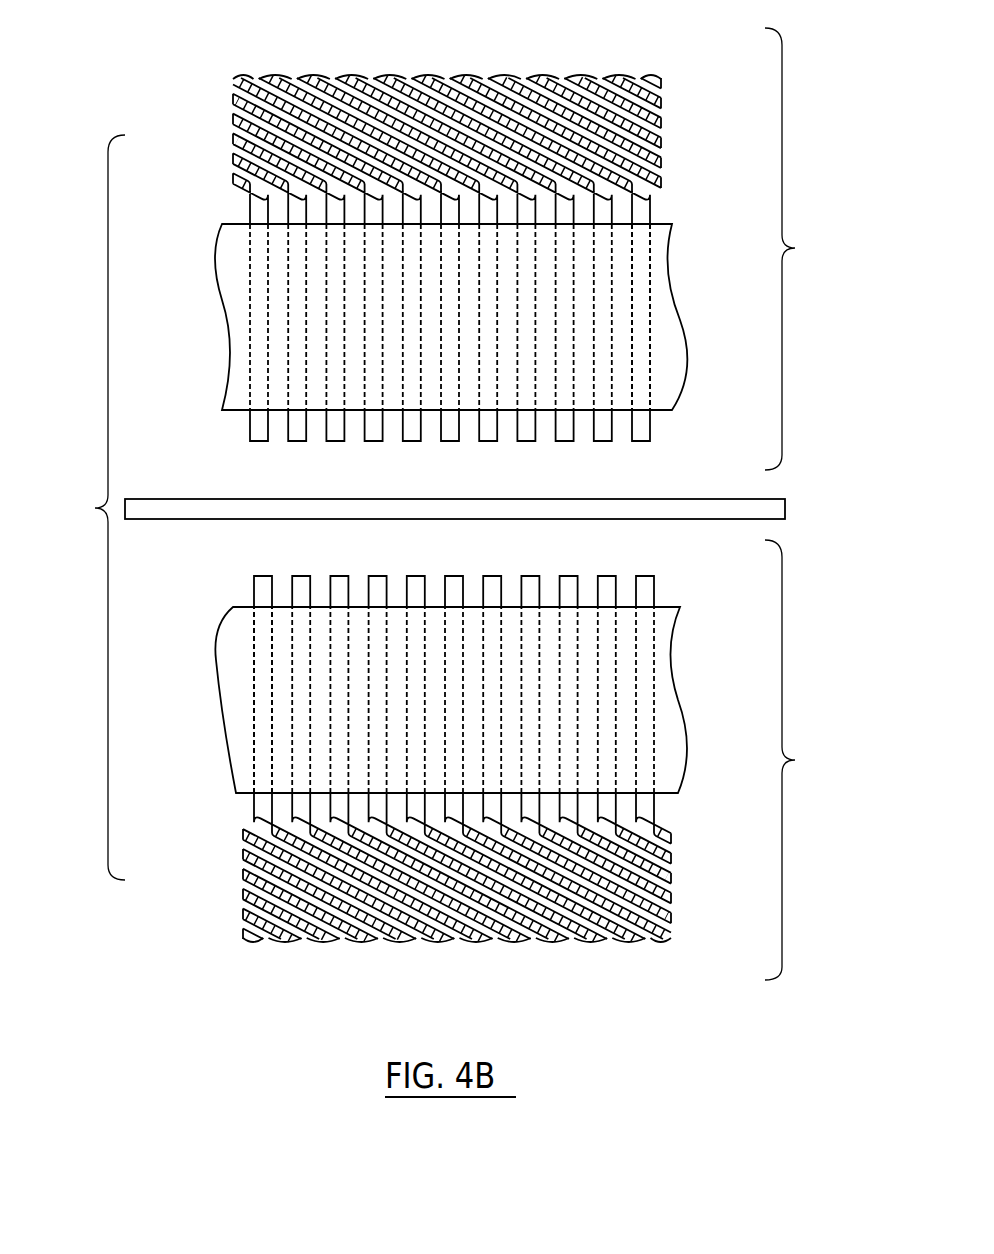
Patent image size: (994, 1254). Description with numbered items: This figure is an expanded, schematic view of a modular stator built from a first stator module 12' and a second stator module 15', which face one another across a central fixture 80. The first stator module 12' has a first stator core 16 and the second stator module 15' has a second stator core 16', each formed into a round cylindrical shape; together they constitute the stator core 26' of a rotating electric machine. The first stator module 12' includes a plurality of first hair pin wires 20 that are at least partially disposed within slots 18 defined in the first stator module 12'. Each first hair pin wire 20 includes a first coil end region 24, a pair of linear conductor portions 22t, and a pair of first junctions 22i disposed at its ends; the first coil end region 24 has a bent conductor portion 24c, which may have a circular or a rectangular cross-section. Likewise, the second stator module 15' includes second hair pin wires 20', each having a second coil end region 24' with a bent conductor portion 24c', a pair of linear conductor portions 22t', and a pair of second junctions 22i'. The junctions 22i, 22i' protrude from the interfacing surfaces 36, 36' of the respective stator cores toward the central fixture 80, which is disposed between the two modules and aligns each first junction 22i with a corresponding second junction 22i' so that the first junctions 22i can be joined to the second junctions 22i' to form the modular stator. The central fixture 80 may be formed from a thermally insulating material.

The first stator module 12' is at (802, 249).
The second stator module 15' is at (802, 760).
The first stator core 16 is at (432, 317).
The second stator core 16' is at (431, 700).
The slots 18 is at (681, 317).
The first hair pin wires 20 is at (441, 115).
The second hair pin wires 20' is at (462, 901).
The first junctions 22i is at (451, 443).
The second junctions 22i' is at (433, 576).
The linear conductor portions 22t is at (494, 317).
The linear conductor portions 22t' is at (456, 700).
The first coil end regions 24 is at (447, 43).
The second coil end regions 24' is at (457, 973).
The bent conductor portion 24c is at (555, 97).
The bent conductor portion 24c' is at (446, 919).
The stator core 26' is at (80, 507).
The interfacing surface 36 is at (214, 415).
The interfacing surface 36' is at (348, 572).
The central fixture 80 is at (778, 500).